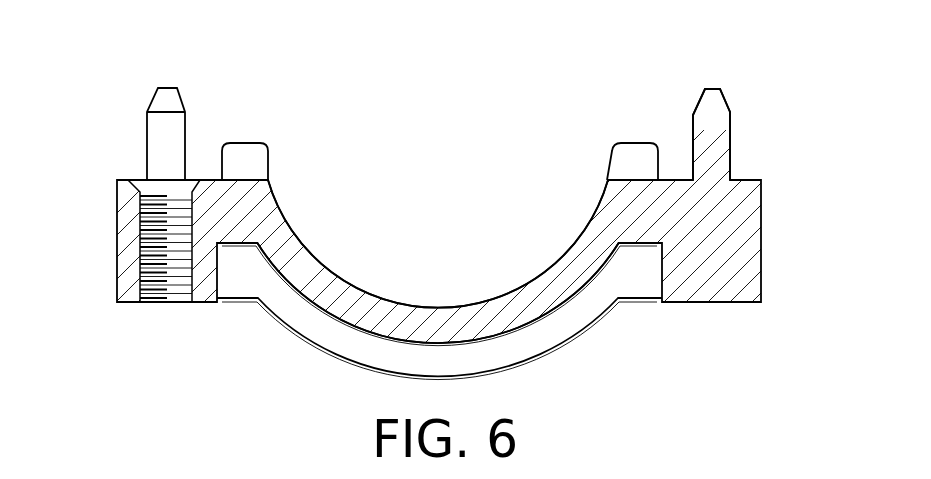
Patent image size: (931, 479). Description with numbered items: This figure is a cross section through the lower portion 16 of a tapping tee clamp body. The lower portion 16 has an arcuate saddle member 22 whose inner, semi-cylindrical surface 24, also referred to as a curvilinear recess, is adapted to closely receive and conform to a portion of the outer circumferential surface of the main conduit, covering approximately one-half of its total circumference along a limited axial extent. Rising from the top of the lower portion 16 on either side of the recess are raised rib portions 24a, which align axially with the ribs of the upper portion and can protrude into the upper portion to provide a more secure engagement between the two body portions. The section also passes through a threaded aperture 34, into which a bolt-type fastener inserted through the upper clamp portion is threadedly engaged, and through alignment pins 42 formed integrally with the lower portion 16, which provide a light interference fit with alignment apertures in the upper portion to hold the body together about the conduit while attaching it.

The lower portion 16 is at (261, 356).
The arcuate saddle member 22 is at (563, 258).
The inner semi-cylindrical surface 24 is at (295, 233).
The raised rib portions 24a is at (247, 158).
The threaded apertures 34 is at (167, 298).
The alignment pins 42 is at (157, 137).